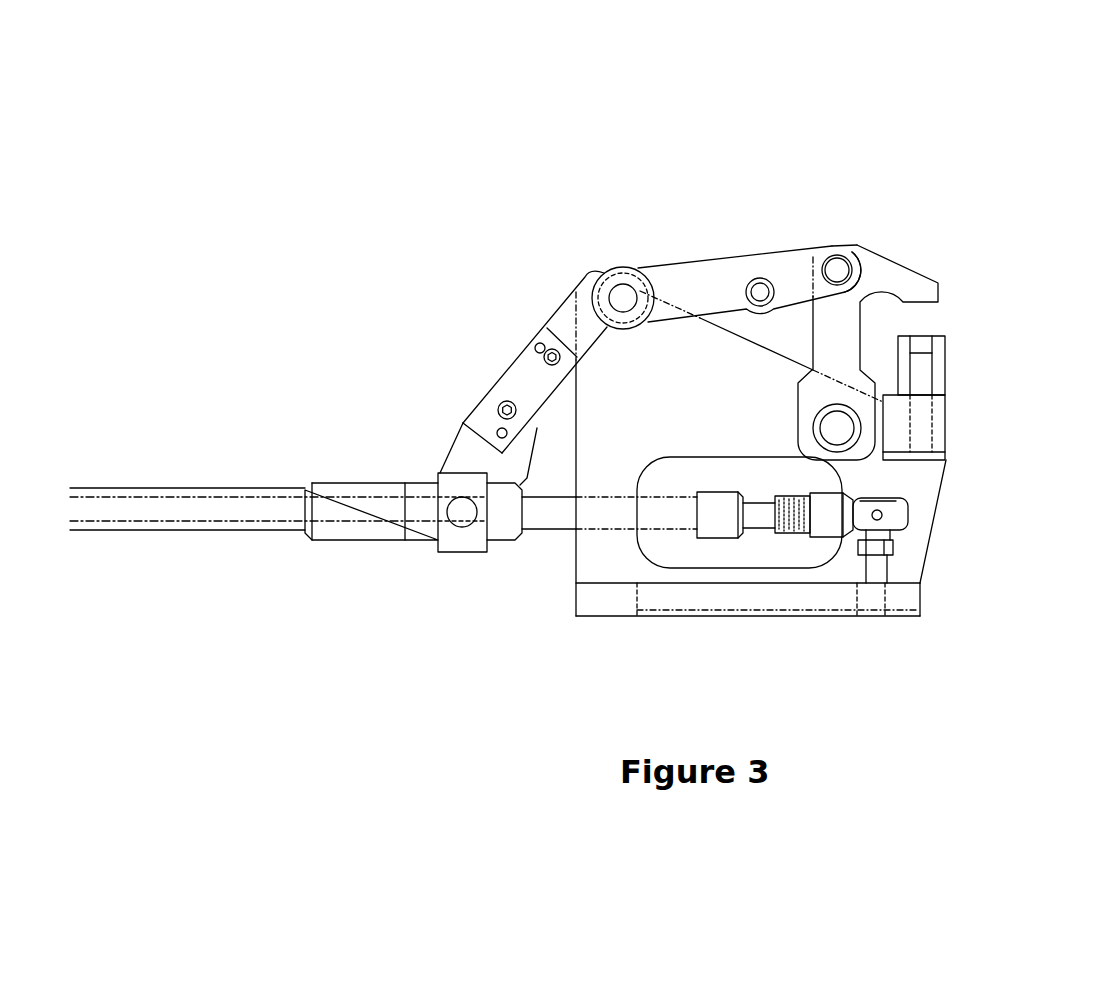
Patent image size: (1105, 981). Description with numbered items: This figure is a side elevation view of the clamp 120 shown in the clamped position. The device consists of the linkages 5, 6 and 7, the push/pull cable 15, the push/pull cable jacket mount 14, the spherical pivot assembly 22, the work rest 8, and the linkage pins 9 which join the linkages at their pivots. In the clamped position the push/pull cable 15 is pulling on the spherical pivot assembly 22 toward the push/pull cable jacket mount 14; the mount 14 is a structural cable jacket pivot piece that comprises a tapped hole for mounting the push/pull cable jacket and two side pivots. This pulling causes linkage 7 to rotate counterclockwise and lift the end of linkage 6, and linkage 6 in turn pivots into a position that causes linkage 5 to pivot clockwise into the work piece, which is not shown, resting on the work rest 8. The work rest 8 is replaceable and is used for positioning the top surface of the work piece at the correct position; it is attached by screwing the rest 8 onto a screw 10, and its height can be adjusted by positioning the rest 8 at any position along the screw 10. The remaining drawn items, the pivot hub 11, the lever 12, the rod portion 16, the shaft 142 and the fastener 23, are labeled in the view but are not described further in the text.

The clamp 120 is at (753, 222).
The linkage 7 is at (692, 281).
The linkage pins 9 is at (838, 268).
The pivot hub 11 is at (622, 266).
The linkage 5 is at (905, 264).
The linkage 6 is at (831, 299).
The work rest 8 is at (946, 357).
The screw 10 is at (920, 372).
The lever arm 12 is at (528, 382).
The push/pull cable 15 is at (360, 482).
The push/pull cable jacket mount 14 is at (462, 515).
The piston rod 16 is at (697, 530).
The shaft 142 is at (757, 519).
The spherical pivot assembly 22 is at (810, 534).
The nut 23 is at (878, 554).